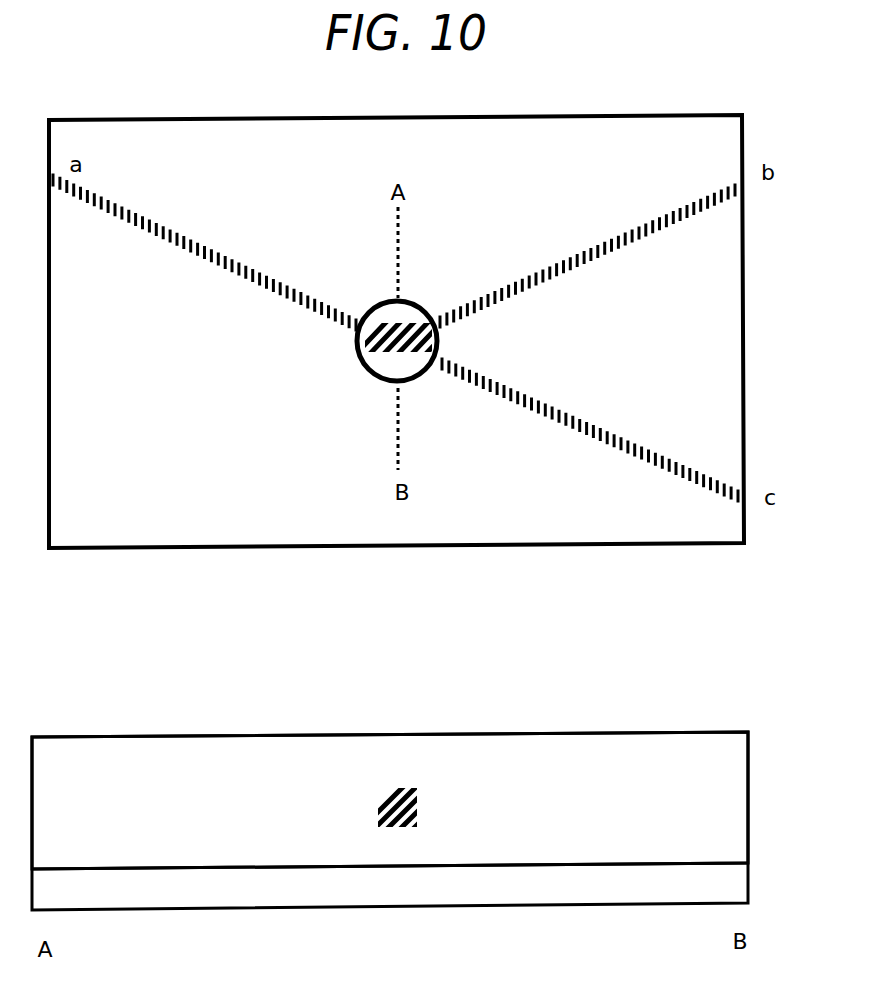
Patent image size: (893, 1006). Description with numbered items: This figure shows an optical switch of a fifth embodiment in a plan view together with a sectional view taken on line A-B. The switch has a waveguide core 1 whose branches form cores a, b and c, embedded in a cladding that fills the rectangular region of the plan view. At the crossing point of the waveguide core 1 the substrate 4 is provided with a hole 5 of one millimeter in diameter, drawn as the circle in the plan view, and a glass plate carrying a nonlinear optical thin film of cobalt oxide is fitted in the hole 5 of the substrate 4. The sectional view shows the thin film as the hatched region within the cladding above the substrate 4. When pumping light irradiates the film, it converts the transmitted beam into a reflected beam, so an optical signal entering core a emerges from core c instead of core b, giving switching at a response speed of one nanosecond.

The waveguide core 1 is at (633, 235).
The substrate 4 is at (584, 888).
The hole 5 is at (357, 357).